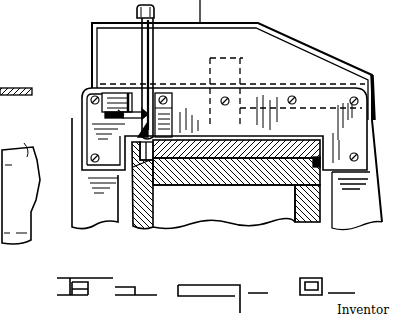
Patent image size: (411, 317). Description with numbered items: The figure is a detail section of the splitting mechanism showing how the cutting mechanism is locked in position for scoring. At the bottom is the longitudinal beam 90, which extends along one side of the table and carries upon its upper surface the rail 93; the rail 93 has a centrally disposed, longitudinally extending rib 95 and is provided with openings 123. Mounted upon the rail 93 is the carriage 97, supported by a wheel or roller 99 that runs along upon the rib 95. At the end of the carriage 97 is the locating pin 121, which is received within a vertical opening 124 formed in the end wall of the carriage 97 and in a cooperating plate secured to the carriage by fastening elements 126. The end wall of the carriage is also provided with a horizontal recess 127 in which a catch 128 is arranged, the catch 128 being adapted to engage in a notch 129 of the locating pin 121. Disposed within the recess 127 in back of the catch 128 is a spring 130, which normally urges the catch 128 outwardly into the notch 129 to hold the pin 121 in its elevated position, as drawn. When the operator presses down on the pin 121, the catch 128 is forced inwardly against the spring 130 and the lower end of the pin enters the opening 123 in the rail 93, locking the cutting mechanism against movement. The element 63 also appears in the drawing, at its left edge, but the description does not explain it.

The locating pin 121 is at (150, 60).
The vertical opening 124 is at (131, 100).
The notch 129 is at (143, 110).
The wheel or roller 99 is at (244, 58).
The spring 130 is at (107, 114).
The horizontal recess 127 is at (122, 116).
The handle shaft 63 is at (3, 149).
The fastening element 126 is at (91, 157).
The carriage 97 is at (76, 207).
The catch 128 is at (122, 112).
The opening 123 is at (157, 186).
The rib 95 is at (227, 142).
The rail 93 is at (262, 140).
The beam 90 is at (305, 219).